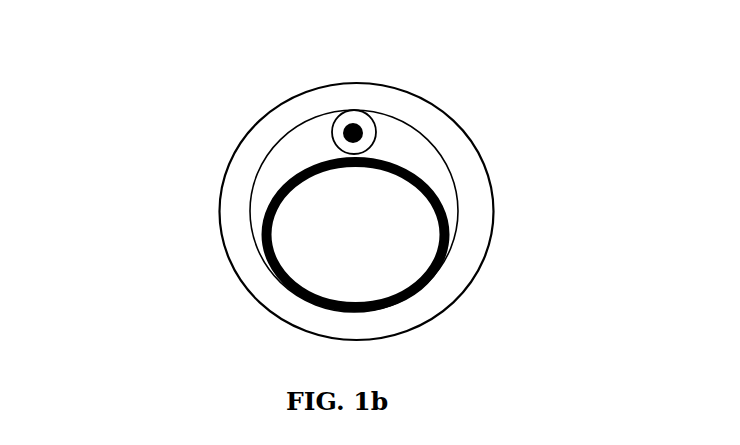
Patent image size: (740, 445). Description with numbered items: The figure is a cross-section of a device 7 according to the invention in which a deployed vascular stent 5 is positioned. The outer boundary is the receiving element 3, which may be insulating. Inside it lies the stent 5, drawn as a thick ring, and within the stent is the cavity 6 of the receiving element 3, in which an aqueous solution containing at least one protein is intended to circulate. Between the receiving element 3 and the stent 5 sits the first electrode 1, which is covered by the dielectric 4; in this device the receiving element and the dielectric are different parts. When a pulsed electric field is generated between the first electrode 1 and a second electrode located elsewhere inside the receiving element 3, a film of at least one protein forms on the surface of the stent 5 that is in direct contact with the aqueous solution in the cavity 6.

The first electrode 1 is at (350, 130).
The receiving element 3 is at (457, 265).
The dielectric 4 is at (345, 130).
The stent 5 is at (285, 182).
The cavity 6 is at (337, 259).
The device 7 is at (214, 160).